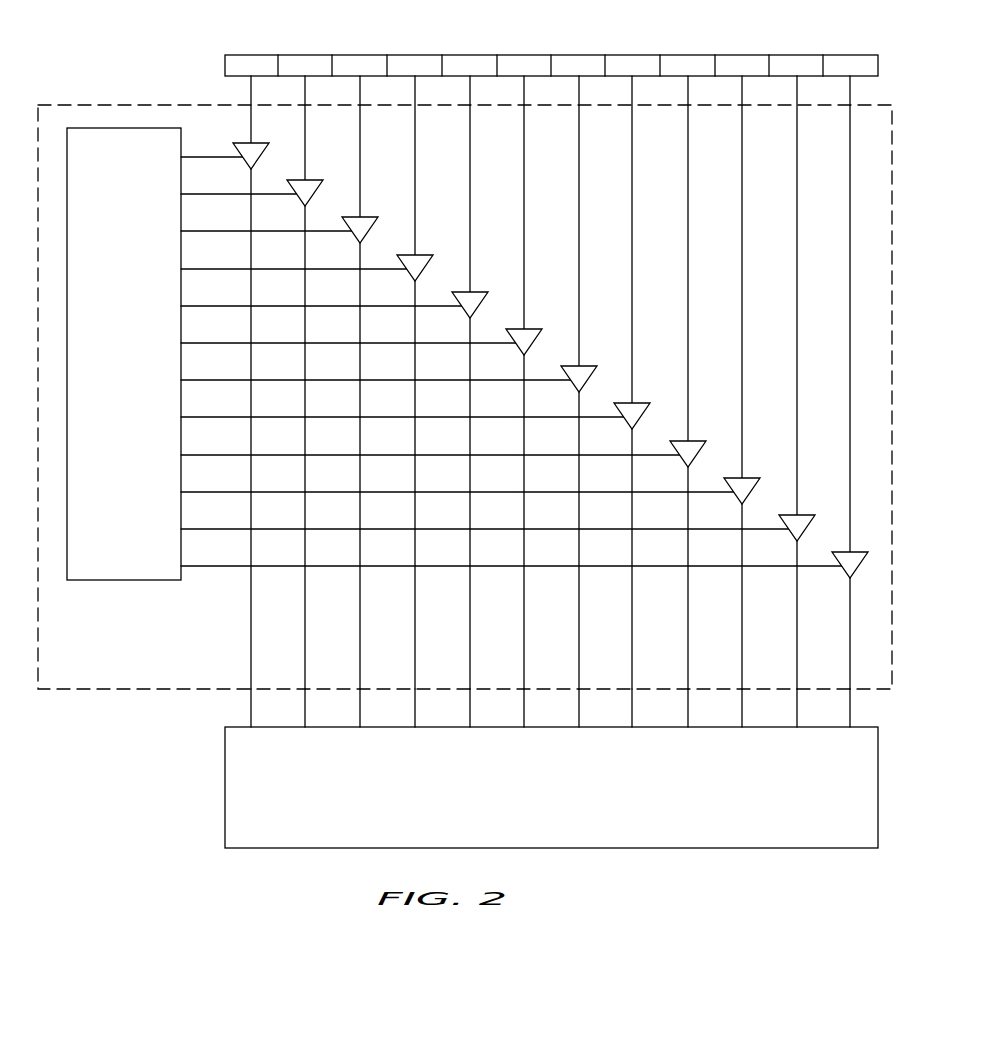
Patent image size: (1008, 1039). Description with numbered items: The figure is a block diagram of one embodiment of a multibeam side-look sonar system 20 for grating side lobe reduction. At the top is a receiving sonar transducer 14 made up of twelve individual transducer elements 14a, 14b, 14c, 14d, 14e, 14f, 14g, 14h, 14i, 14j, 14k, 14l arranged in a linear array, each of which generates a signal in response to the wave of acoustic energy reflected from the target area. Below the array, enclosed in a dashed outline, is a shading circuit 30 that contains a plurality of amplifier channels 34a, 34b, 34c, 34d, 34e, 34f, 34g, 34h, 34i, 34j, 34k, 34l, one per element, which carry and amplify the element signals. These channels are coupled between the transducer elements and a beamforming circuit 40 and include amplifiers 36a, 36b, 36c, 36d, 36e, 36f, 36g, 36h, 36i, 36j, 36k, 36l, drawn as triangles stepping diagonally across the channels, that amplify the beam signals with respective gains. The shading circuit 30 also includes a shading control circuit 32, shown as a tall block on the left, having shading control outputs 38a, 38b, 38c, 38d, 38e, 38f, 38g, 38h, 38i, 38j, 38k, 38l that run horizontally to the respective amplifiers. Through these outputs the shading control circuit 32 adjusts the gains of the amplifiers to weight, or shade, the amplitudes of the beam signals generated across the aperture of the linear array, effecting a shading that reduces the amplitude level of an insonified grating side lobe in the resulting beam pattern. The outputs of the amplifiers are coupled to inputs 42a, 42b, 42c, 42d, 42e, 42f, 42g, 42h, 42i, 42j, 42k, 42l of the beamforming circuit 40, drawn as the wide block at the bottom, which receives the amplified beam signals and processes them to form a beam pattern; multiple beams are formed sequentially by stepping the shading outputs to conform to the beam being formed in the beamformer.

The receiving sonar transducer 14 is at (225, 68).
The transducer element 14a is at (251, 55).
The transducer element 14b is at (305, 55).
The transducer element 14c is at (360, 55).
The transducer element 14d is at (415, 55).
The transducer element 14e is at (470, 55).
The transducer element 14f is at (524, 55).
The transducer element 14g is at (579, 55).
The transducer element 14h is at (632, 55).
The transducer element 14i is at (688, 55).
The transducer element 14j is at (742, 55).
The transducer element 14k is at (797, 55).
The transducer element 14l is at (850, 55).
The multibeam side-look sonar system 20 is at (146, 818).
The shading circuit 30 is at (149, 672).
The shading control circuit 32 is at (101, 583).
The amplifier 36a is at (264, 150).
The amplifier 36b is at (318, 187).
The amplifier 36c is at (373, 224).
The amplifier 36d is at (428, 262).
The amplifier 36e is at (483, 299).
The amplifier 36f is at (537, 336).
The amplifier 36g is at (592, 373).
The amplifier 36h is at (645, 410).
The amplifier 36i is at (701, 448).
The amplifier 36j is at (755, 485).
The amplifier 36k is at (810, 522).
The amplifier 36l is at (863, 559).
The shading control output 38a is at (216, 147).
The shading control output 38b is at (243, 184).
The shading control output 38c is at (270, 221).
The shading control output 38d is at (298, 259).
The shading control output 38e is at (325, 296).
The shading control output 38f is at (352, 333).
The shading control output 38g is at (380, 370).
The shading control output 38h is at (406, 407).
The shading control output 38i is at (434, 445).
The shading control output 38j is at (461, 482).
The shading control output 38k is at (489, 519).
The shading control output 38l is at (515, 556).
The amplifier channel 34a is at (251, 658).
The amplifier channel 34b is at (305, 658).
The amplifier channel 34c is at (360, 658).
The amplifier channel 34d is at (415, 658).
The amplifier channel 34e is at (470, 658).
The amplifier channel 34f is at (524, 658).
The amplifier channel 34g is at (579, 658).
The amplifier channel 34h is at (632, 658).
The amplifier channel 34i is at (688, 658).
The amplifier channel 34j is at (742, 658).
The amplifier channel 34k is at (797, 658).
The amplifier channel 34l is at (850, 658).
The beamforming circuit 40 is at (225, 758).
The input 42a is at (248, 712).
The input 42b is at (302, 712).
The input 42c is at (357, 712).
The input 42d is at (412, 712).
The input 42e is at (467, 712).
The input 42f is at (521, 712).
The input 42g is at (576, 712).
The input 42h is at (629, 712).
The input 42i is at (685, 712).
The input 42j is at (739, 712).
The input 42k is at (794, 712).
The input 42l is at (847, 712).